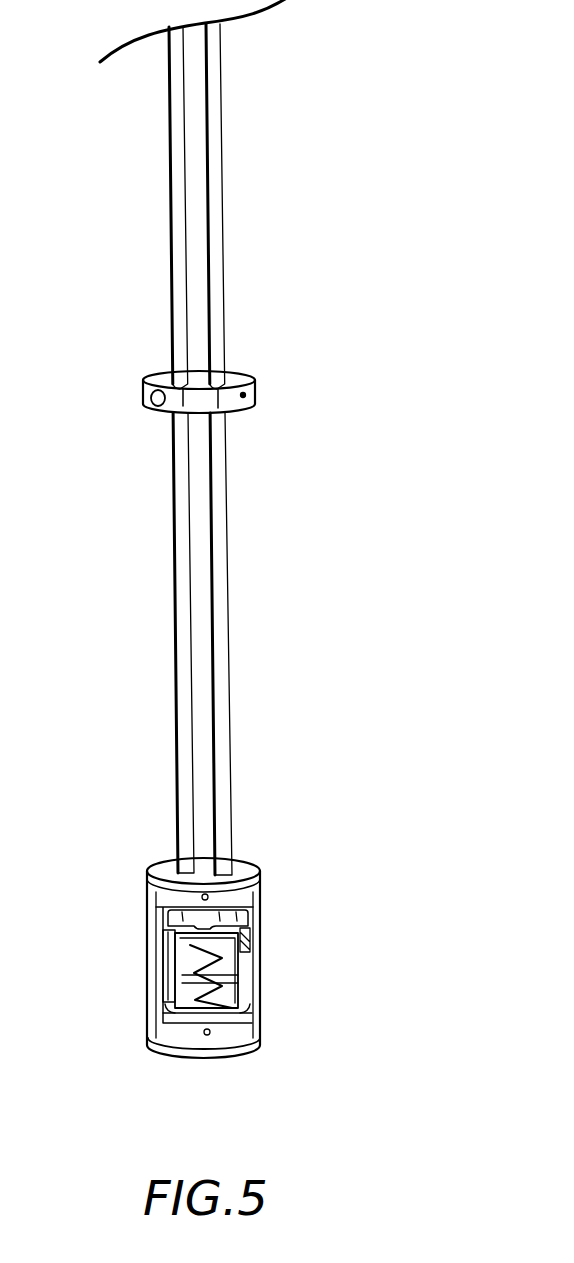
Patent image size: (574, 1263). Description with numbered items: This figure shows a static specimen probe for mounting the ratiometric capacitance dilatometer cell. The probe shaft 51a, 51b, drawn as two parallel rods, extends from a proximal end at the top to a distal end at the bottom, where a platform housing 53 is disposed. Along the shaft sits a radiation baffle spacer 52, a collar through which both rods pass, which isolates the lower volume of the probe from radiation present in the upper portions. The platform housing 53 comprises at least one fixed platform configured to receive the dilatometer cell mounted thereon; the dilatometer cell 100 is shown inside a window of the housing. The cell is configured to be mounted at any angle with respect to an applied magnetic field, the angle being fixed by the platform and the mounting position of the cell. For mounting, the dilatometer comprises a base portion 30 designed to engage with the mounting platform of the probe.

The probe shaft 51a is at (218, 230).
The probe shaft 51b is at (180, 253).
The radiation baffle spacer 52 is at (243, 378).
The platform housing 53 is at (257, 902).
The dilatometer cell 100 is at (192, 961).
The base portion 30 is at (243, 975).